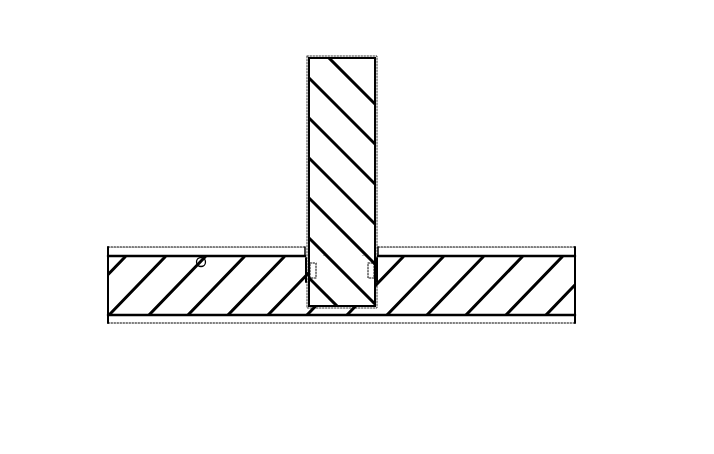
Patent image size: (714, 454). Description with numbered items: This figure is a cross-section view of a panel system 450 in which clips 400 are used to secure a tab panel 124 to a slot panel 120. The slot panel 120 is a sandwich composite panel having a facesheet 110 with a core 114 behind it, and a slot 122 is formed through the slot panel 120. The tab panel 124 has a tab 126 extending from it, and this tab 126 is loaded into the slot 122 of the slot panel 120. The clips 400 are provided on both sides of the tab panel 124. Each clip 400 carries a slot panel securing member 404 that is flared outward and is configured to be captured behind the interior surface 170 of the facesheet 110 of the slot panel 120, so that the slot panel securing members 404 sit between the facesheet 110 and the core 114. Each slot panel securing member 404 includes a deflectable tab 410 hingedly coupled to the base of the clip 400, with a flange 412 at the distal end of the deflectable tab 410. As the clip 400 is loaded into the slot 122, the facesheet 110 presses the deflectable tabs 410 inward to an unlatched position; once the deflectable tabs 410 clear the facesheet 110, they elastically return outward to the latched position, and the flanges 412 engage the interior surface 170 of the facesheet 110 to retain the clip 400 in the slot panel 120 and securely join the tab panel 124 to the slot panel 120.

The panel system 450 is at (195, 70).
The tab panel 124 is at (356, 54).
The slot panel 120 is at (102, 281).
The core 114 is at (558, 290).
The facesheet 110 is at (167, 253).
The flange 412 is at (316, 262).
The deflectable tab 410 is at (301, 263).
The interior surface 170 is at (197, 263).
The slot panel securing member 404 is at (296, 276).
The tab 126 is at (342, 288).
The slot 122 is at (376, 316).
The clip 400 is at (389, 289).